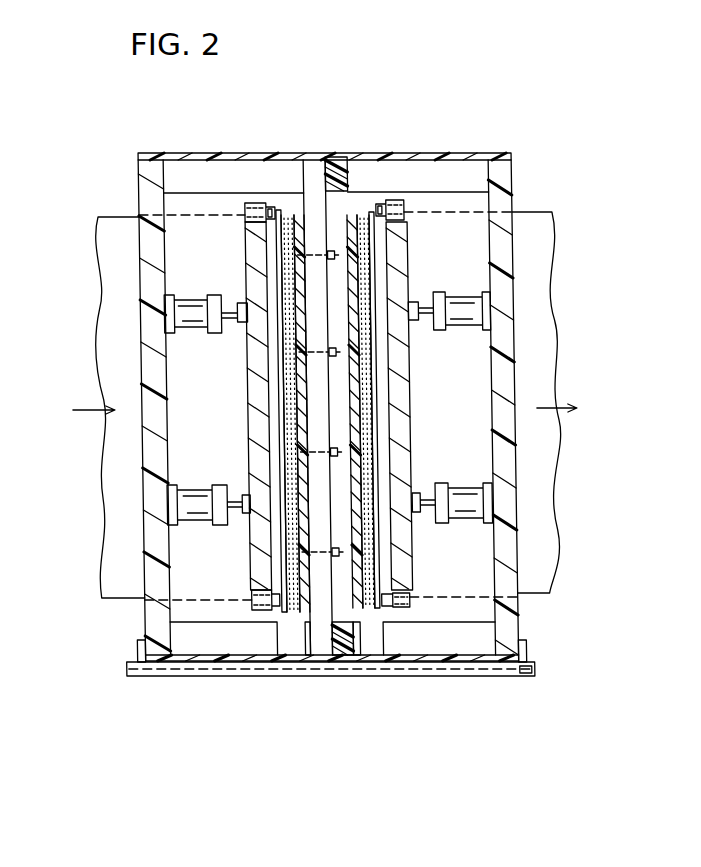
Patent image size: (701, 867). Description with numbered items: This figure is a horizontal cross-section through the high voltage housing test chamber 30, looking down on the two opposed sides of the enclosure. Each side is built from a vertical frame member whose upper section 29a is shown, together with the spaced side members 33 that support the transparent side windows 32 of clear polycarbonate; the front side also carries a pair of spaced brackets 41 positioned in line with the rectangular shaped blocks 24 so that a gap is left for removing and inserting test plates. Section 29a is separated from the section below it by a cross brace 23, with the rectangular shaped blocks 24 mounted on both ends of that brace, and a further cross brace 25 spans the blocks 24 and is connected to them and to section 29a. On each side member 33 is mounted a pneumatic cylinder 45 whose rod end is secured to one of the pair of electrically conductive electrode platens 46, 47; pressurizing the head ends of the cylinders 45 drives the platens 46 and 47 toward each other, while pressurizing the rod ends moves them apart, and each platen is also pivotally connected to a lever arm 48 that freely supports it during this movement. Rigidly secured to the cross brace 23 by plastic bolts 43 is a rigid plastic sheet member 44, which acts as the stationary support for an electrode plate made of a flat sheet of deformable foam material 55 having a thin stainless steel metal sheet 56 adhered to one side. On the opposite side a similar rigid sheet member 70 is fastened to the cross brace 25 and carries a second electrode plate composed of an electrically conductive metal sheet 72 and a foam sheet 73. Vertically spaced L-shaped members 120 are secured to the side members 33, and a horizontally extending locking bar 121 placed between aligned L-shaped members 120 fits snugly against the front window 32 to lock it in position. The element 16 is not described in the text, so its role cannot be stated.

The housing test chamber 30 is at (506, 104).
The transparent side window 32 is at (286, 157).
The spaced bracket 41 is at (230, 170).
The vertical frame member section 29a is at (337, 172).
The lever arm 48 is at (380, 208).
The electrode platen 46 is at (256, 263).
The electrode platen 47 is at (400, 265).
The pneumatic cylinder 45 is at (185, 315).
The plastic bolt 43 is at (292, 352).
The metal sheet 56 is at (365, 337).
The foam sheet 55 is at (350, 368).
The rigid sheet member 44 is at (380, 408).
The rigid sheet member 70 is at (285, 373).
The foam sheet 73 is at (285, 405).
The electrically conductive metal sheet 72 is at (285, 428).
The workpiece path 16 is at (285, 455).
The side member 33 is at (504, 457).
The L-shaped member 120 is at (132, 652).
The locking bar 121 is at (163, 672).
The rectangular shaped block 24 is at (300, 637).
The cross brace 25 is at (313, 647).
The cross brace 23 is at (348, 608).